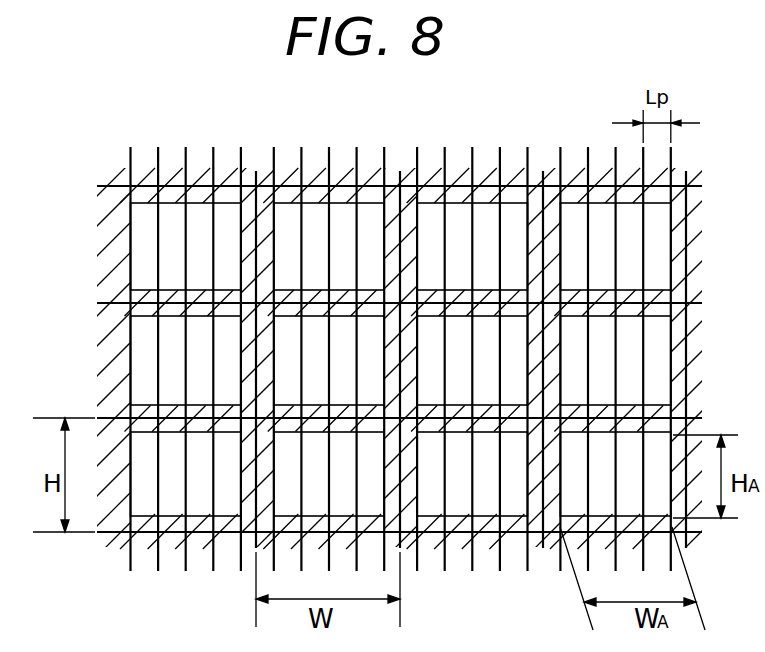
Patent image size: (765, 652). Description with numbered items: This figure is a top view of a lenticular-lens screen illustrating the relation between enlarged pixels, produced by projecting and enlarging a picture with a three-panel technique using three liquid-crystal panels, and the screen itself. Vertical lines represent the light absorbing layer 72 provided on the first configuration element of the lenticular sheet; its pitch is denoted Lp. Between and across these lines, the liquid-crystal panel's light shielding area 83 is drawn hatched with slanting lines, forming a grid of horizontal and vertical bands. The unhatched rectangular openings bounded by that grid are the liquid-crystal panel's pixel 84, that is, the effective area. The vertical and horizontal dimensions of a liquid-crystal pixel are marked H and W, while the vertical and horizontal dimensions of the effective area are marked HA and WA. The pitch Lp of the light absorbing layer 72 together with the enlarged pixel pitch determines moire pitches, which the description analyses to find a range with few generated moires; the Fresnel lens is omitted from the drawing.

The light absorbing layer 72 is at (445, 147).
The light shielding area 83 is at (107, 282).
The pixel 84 is at (140, 355).